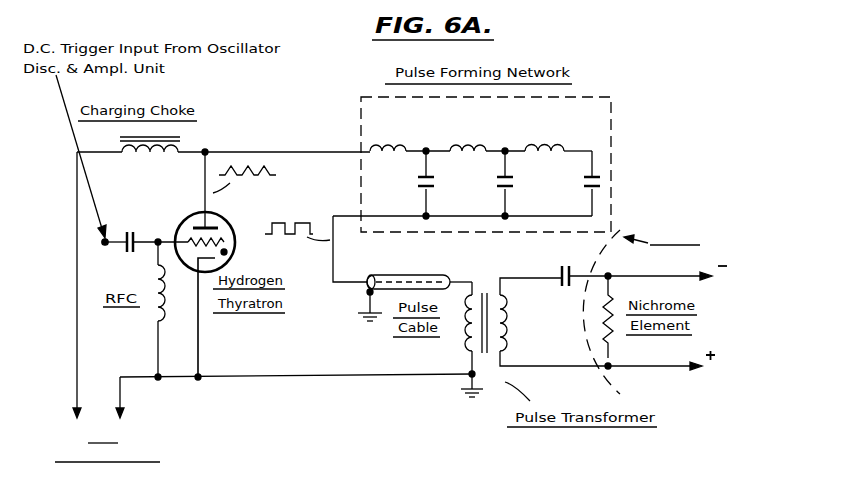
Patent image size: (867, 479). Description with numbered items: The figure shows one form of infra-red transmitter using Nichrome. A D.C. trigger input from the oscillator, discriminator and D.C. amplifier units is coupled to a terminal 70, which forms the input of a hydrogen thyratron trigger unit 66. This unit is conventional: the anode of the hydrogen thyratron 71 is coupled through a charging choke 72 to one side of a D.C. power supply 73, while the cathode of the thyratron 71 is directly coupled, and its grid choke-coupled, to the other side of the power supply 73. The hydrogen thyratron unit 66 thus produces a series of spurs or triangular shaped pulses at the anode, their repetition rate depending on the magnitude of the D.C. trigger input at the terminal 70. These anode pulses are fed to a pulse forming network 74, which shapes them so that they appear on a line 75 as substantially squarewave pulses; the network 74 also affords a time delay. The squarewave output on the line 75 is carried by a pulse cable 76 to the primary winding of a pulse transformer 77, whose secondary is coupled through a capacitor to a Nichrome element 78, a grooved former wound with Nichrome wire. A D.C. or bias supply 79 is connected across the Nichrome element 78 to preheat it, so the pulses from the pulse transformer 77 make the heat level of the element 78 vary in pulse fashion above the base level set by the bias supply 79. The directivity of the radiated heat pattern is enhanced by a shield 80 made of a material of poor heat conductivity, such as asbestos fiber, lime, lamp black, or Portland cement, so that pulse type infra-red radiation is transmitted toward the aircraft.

The hydrogen thyratron trigger unit 66 is at (295, 343).
The terminal 70 is at (108, 249).
The hydrogen thyratron 71 is at (180, 228).
The charging choke 72 is at (148, 160).
The D.C. power supply 73 is at (97, 414).
The pulse forming network 74 is at (368, 120).
The line 75 is at (353, 226).
The pulse cable 76 is at (436, 275).
The pulse transformer 77 is at (487, 289).
The Nichrome element 78 is at (602, 332).
The D.C. or bias supply 79 is at (708, 267).
The shield 80 is at (606, 252).